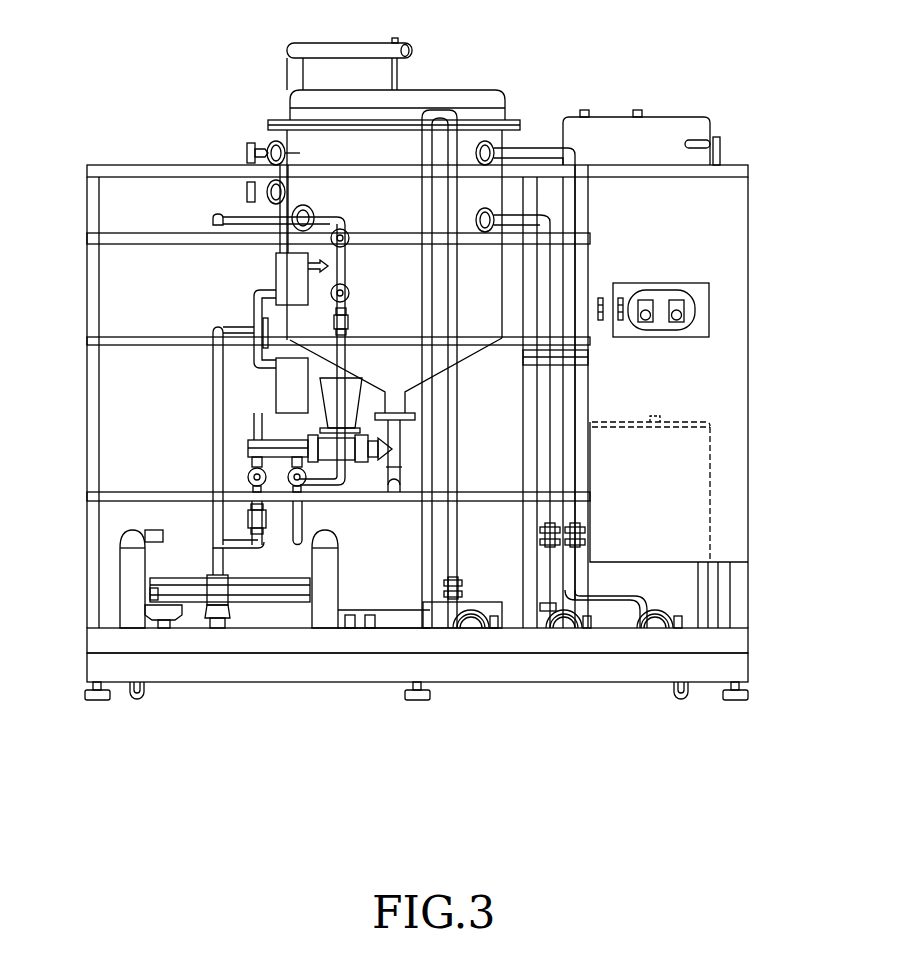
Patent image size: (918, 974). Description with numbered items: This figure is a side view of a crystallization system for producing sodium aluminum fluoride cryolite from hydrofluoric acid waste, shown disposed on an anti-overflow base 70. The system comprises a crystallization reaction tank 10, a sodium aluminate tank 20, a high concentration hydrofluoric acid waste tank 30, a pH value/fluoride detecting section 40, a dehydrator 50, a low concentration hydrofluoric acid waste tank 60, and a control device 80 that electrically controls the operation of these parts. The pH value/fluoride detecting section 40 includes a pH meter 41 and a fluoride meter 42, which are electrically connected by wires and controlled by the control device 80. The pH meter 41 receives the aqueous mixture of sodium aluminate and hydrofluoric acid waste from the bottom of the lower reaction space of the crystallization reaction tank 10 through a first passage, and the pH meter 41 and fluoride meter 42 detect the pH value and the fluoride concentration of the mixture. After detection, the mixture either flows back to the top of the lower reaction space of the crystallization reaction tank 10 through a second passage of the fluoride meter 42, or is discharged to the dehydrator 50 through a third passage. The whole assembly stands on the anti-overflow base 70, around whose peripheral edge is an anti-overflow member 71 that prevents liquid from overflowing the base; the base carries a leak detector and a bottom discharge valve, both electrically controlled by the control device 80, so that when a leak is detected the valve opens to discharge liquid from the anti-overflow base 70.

The crystallization reaction tank 10 is at (459, 92).
The sodium aluminate tank 20 is at (661, 118).
The high concentration hydrofluoric acid waste tank 30 is at (662, 424).
The pH value/fluoride detecting section 40 is at (239, 306).
The pH meter 41 is at (283, 261).
The fluoride meter 42 is at (283, 385).
The dehydrator 50 is at (186, 523).
The low concentration hydrofluoric acid waste tank 60 is at (246, 628).
The anti-overflow base 70 is at (531, 672).
The anti-overflow member 71 is at (616, 643).
The control device 80 is at (724, 200).